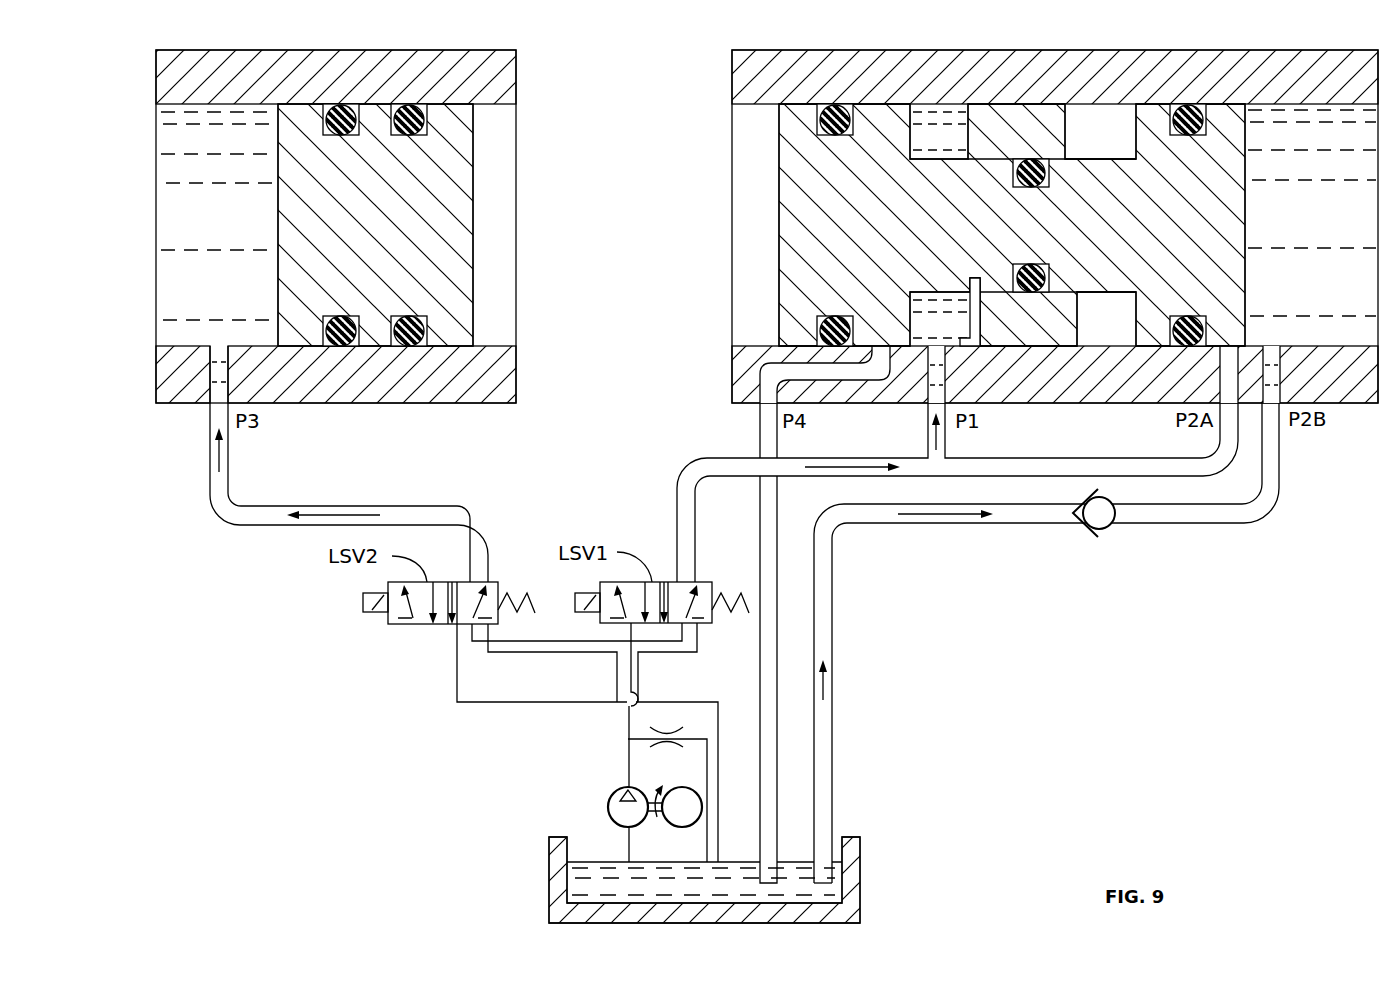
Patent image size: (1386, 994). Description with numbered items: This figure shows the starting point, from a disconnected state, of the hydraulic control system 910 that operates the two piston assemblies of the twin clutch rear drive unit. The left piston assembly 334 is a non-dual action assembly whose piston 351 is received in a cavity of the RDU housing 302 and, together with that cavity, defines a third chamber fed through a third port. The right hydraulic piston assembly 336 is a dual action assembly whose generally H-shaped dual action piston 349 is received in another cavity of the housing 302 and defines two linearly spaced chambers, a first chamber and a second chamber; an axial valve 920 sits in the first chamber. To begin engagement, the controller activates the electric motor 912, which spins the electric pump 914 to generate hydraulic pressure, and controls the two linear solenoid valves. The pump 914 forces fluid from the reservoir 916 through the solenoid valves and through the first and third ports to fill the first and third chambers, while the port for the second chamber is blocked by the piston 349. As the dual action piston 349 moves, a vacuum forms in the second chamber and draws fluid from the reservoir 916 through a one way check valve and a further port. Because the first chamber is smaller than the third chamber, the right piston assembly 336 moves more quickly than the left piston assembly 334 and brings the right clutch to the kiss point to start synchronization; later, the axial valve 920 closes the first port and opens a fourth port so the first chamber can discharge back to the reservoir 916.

The RDU housing 302 is at (441, 62).
The dual action piston 349 is at (1155, 117).
The piston 351 is at (433, 200).
The axial valve 920 is at (981, 322).
The left piston assembly 334 is at (214, 552).
The right hydraulic piston assembly 336 is at (1134, 587).
The hydraulic control system 910 is at (477, 716).
The electric pump 914 is at (608, 807).
The electric motor 912 is at (703, 805).
The reservoir 916 is at (833, 892).